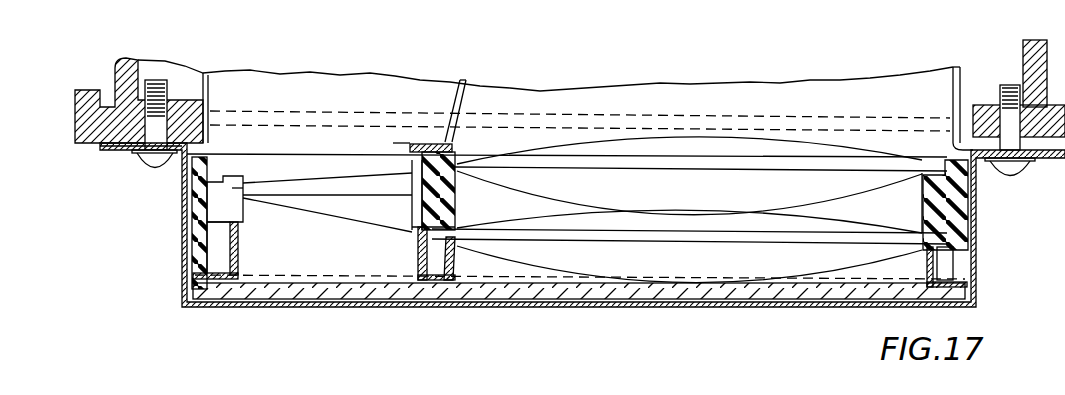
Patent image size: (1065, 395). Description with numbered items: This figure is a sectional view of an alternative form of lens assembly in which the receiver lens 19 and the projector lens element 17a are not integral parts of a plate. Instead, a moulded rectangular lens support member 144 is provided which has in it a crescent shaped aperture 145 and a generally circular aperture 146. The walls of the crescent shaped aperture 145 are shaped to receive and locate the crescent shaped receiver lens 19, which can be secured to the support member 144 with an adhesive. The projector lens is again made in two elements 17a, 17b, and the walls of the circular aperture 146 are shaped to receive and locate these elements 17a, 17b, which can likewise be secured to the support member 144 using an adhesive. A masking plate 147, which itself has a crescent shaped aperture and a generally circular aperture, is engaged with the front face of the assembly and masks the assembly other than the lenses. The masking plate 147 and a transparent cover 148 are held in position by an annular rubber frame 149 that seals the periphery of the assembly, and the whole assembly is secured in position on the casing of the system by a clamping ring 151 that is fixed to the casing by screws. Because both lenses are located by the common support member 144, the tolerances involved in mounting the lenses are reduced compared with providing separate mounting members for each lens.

The lens support member 144 is at (203, 185).
The crescent shaped aperture 145 is at (238, 188).
The generally circular aperture 146 is at (437, 163).
The masking plate 147 is at (241, 226).
The transparent cover 148 is at (607, 285).
The annular rubber frame 149 is at (183, 249).
The clamping ring 151 is at (183, 180).
The projector lens element 17a is at (771, 149).
The projector lens element 17b is at (763, 262).
The receiver lens 19 is at (346, 208).